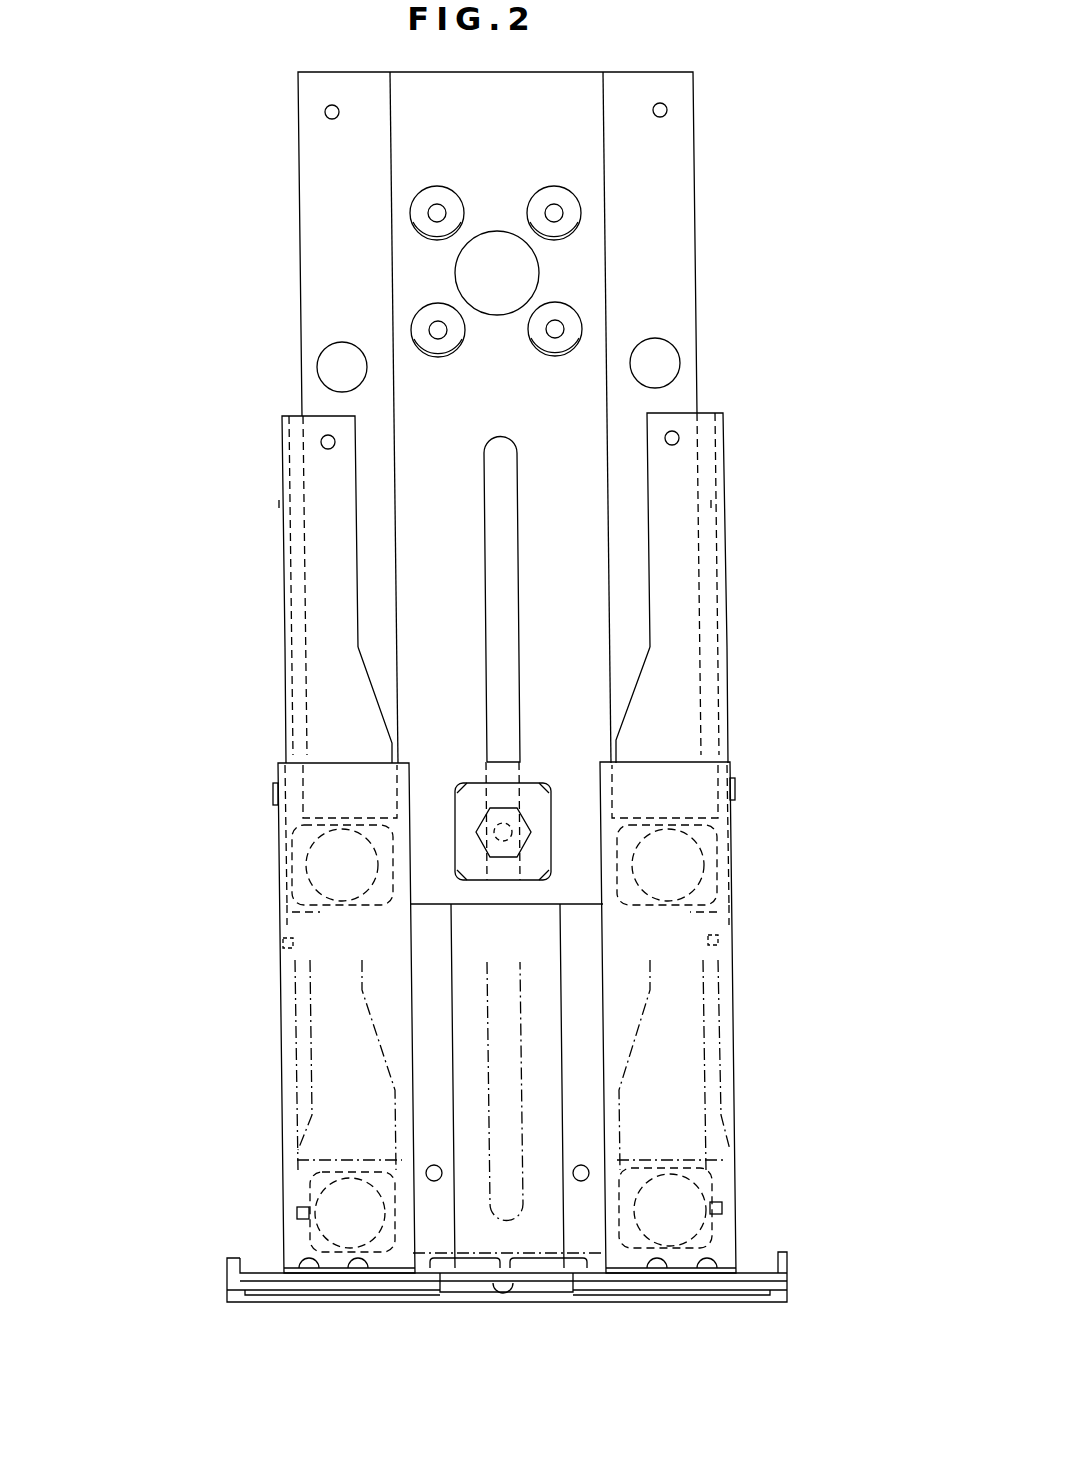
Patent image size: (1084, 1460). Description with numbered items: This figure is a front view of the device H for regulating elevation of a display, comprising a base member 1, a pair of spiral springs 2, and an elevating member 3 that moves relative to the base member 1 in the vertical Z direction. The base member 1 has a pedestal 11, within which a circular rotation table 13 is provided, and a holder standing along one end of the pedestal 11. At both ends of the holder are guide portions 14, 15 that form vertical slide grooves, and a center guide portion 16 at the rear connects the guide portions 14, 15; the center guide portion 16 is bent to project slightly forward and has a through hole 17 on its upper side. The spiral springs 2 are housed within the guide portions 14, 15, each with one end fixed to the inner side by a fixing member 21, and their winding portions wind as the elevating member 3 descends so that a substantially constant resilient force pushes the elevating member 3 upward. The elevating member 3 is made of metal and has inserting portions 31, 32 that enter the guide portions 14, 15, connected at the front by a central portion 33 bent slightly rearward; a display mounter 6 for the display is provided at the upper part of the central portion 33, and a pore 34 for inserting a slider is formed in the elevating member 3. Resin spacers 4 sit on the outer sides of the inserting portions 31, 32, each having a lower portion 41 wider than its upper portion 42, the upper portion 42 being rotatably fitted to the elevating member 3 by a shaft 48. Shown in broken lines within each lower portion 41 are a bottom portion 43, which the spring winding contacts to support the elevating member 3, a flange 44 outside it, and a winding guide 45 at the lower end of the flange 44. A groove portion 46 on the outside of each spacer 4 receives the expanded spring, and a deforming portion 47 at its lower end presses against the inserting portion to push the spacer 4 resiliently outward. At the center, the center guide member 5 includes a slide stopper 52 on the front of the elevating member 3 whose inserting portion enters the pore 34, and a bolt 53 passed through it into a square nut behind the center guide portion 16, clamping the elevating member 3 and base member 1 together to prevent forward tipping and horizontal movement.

The device for regulating elevation of a display H is at (268, 237).
The Z direction Z is at (246, 546).
The base member 1 is at (282, 1105).
The spiral spring 2 is at (285, 945).
The elevating member 3 is at (712, 313).
The spacer 4 is at (284, 690).
The center guide member 5 is at (563, 802).
The display mounter 6 is at (556, 270).
The pedestal 11 is at (753, 1263).
The circular rotation table 13 is at (745, 1295).
The guide portion 14 is at (293, 937).
The guide portion 15 is at (683, 1007).
The center guide portion 16 is at (545, 1093).
The through hole 17 is at (487, 795).
The fixing member 21 is at (273, 800).
The inserting portion 31 is at (318, 400).
The inserting portion 32 is at (683, 395).
The central portion 33 is at (580, 603).
The pore for inserting a slider 34 is at (517, 553).
The lower portion of spacer 41 is at (328, 707).
The upper portion of spacer 42 is at (322, 483).
The bottom portion 43 is at (285, 860).
The flange 44 is at (287, 882).
The winding guide 45 is at (292, 915).
The groove portion 46 is at (278, 505).
The deforming portion 47 is at (280, 825).
The shaft 48 is at (321, 442).
The slide stopper 52 is at (527, 868).
The bolt 53 is at (480, 847).